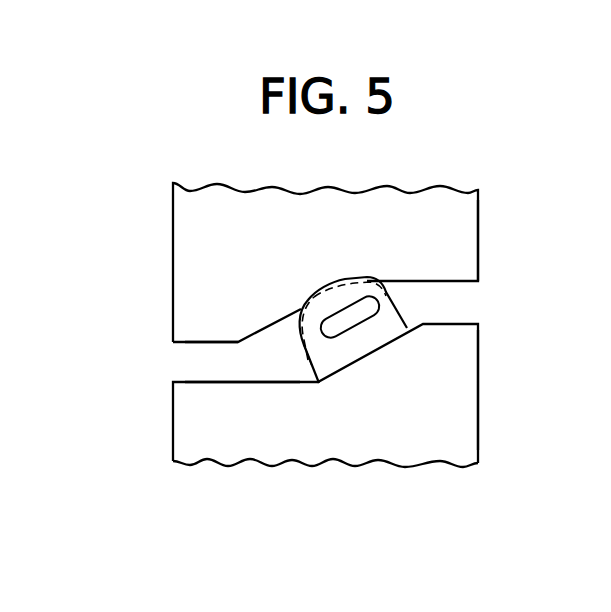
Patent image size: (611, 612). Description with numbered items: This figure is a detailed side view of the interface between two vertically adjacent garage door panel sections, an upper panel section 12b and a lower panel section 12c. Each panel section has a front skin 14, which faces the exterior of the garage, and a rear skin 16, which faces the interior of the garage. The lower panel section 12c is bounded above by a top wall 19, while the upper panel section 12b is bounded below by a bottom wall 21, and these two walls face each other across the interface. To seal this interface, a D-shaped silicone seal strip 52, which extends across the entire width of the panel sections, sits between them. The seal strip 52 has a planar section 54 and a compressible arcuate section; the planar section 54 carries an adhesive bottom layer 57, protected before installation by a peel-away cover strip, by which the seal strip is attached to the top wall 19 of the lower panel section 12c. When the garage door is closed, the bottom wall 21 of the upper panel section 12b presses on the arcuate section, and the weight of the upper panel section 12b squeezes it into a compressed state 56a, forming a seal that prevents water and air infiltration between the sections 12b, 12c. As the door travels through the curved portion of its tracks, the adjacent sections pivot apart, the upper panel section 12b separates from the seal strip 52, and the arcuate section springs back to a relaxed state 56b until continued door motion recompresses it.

The upper panel section 12b is at (298, 237).
The lower panel section 12c is at (381, 446).
The front skin 14 is at (173, 220).
The rear skin 16 is at (478, 245).
The top wall 19 is at (177, 382).
The bottom wall 21 is at (174, 348).
The seal strip 52 is at (302, 345).
The planar section 54 is at (390, 322).
The compressed state 56a is at (297, 309).
The relaxed state 56b is at (328, 291).
The adhesive bottom layer 57 is at (386, 347).